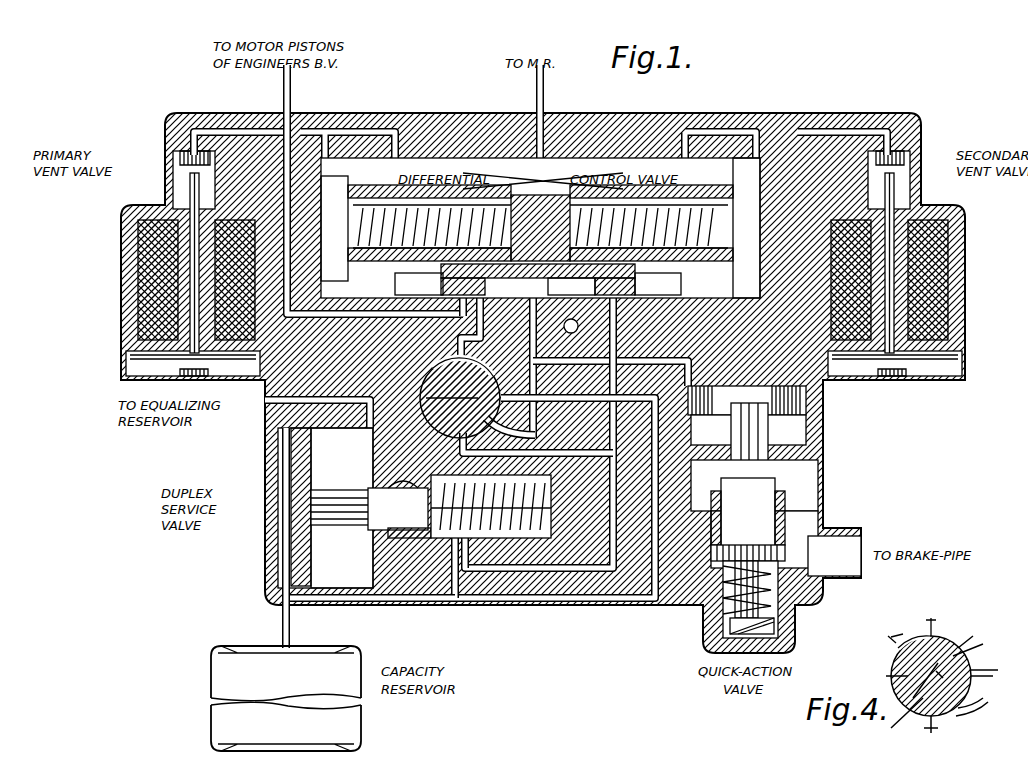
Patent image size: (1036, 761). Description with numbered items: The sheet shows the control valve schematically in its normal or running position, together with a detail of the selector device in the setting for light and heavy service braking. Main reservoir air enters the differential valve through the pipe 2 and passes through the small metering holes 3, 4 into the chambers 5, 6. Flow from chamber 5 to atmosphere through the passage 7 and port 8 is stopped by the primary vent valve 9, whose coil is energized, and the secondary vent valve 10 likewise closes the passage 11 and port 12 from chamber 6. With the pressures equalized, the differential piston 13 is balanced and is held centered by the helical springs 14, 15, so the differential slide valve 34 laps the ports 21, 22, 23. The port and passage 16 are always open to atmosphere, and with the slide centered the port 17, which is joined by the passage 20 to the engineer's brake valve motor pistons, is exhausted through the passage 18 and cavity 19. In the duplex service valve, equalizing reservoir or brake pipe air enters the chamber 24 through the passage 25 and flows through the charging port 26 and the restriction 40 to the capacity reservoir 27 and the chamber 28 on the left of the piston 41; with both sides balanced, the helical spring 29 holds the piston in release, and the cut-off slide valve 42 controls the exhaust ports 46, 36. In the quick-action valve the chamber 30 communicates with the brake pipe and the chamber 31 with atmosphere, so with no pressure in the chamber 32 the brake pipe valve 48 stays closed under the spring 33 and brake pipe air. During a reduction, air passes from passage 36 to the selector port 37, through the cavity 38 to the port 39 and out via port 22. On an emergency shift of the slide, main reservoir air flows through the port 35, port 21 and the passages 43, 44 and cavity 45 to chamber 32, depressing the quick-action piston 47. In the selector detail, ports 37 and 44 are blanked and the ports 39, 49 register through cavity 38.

In FIG. 1, the pipe 2 is at (547, 117).
In FIG. 1, the metering hole 3 is at (356, 124).
In FIG. 1, the metering hole 4 is at (709, 124).
In FIG. 1, the chamber 5 is at (334, 228).
In FIG. 1, the chamber 6 is at (746, 228).
In FIG. 1, the passage 7 is at (232, 124).
In FIG. 1, the port 8 is at (178, 249).
In FIG. 1, the vent valve 9 is at (195, 262).
In FIG. 1, the vent valve 10 is at (893, 262).
In FIG. 1, the passage 11 is at (822, 124).
In FIG. 1, the port 12 is at (908, 249).
In FIG. 1, the differential piston 13 is at (540, 228).
In FIG. 1, the helical spring 14 is at (429, 223).
In FIG. 1, the helical spring 15 is at (651, 223).
In FIG. 1, the port and passage 16 is at (570, 320).
In FIG. 1, the port 17 is at (449, 306).
In FIG. 1, the passage 18 is at (538, 279).
In FIG. 1, the cavity 19 is at (571, 286).
In FIG. 1, the passage 20 is at (362, 189).
In FIG. 1, the port 21 is at (480, 327).
In FIG. 1, the port 22 is at (543, 366).
In FIG. 1, the port 23 is at (552, 431).
In FIG. 1, the chamber 24 is at (342, 508).
In FIG. 1, the passage 25 is at (305, 415).
In FIG. 1, the charging port 26 is at (436, 553).
In FIG. 1, the capacity reservoir 27 is at (286, 698).
In FIG. 1, the chamber 28 is at (272, 451).
In FIG. 1, the helical spring 29 is at (491, 506).
In FIG. 1, the chamber 30 is at (759, 552).
In FIG. 1, the chamber 31 is at (754, 485).
In FIG. 1, the chamber 32 is at (775, 385).
In FIG. 1, the spring 33 is at (752, 628).
In FIG. 1, the differential slide valve 34 is at (658, 284).
In FIG. 1, the port 35 is at (419, 284).
In FIG. 1, the passage 36 is at (491, 525).
In FIG. 1, the port 37 is at (524, 443).
In FIG. 4, the port 37 is at (940, 728).
In FIG. 1, the cavity 38 is at (460, 398).
In FIG. 4, the cavity 38 is at (960, 673).
In FIG. 1, the port 39 is at (510, 422).
In FIG. 4, the port 39 is at (972, 704).
In FIG. 1, the restriction 40 is at (352, 593).
In FIG. 1, the piston 41 is at (303, 535).
In FIG. 1, the cut-off slide valve 42 is at (369, 505).
In FIG. 1, the passage 43 is at (448, 355).
In FIG. 4, the passage 43 is at (922, 626).
In FIG. 1, the passage 44 is at (593, 364).
In FIG. 4, the passage 44 is at (966, 636).
In FIG. 1, the cavity 45 is at (463, 374).
In FIG. 4, the cavity 45 is at (900, 641).
In FIG. 1, the exhaust port 46 is at (454, 559).
In FIG. 1, the quick-action piston 47 is at (734, 440).
In FIG. 1, the brake pipe valve 48 is at (733, 589).
In FIG. 1, the port 49 is at (555, 486).
In FIG. 4, the port 49 is at (984, 663).